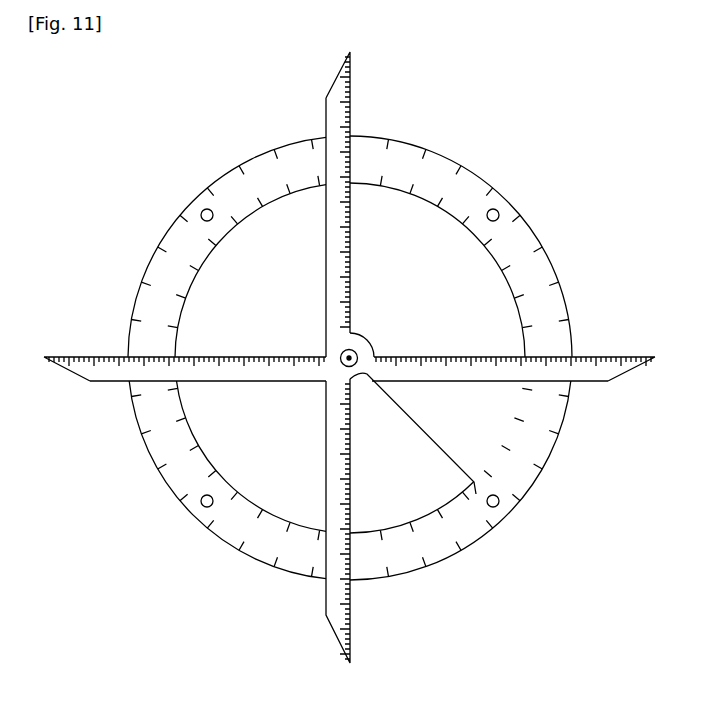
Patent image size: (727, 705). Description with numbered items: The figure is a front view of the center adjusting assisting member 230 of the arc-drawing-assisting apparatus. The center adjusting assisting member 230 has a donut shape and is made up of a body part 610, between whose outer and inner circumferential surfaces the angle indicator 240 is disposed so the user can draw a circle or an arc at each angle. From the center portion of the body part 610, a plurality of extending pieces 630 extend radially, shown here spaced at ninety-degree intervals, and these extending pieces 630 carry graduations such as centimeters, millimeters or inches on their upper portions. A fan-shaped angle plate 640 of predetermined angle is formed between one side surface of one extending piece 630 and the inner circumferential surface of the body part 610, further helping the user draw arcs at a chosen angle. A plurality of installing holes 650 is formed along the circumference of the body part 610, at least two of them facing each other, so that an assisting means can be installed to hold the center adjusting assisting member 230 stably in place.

The center adjusting assisting member 230 is at (368, 334).
The angle indicator 240 is at (552, 252).
The body part 610 is at (441, 147).
The extending pieces 630 is at (328, 105).
The angle plate 640 is at (457, 417).
The installing holes 650 is at (497, 210).